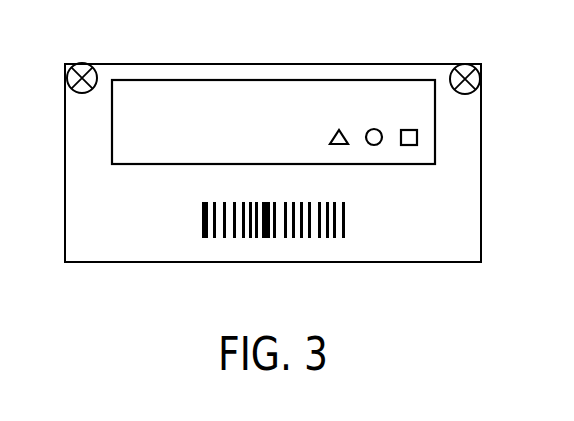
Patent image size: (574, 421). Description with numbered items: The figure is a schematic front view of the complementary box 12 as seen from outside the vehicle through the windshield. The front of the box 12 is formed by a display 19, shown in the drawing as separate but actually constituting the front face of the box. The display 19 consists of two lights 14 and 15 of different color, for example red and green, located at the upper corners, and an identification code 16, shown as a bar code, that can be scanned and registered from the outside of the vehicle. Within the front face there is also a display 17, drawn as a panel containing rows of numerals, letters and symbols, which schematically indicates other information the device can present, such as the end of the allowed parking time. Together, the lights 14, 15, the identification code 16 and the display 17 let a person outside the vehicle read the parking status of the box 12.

The complementary box 12 is at (484, 246).
The light 14 is at (70, 71).
The light 15 is at (480, 78).
The identification code 16 is at (315, 228).
The display 17 is at (365, 103).
The display 19 is at (429, 245).